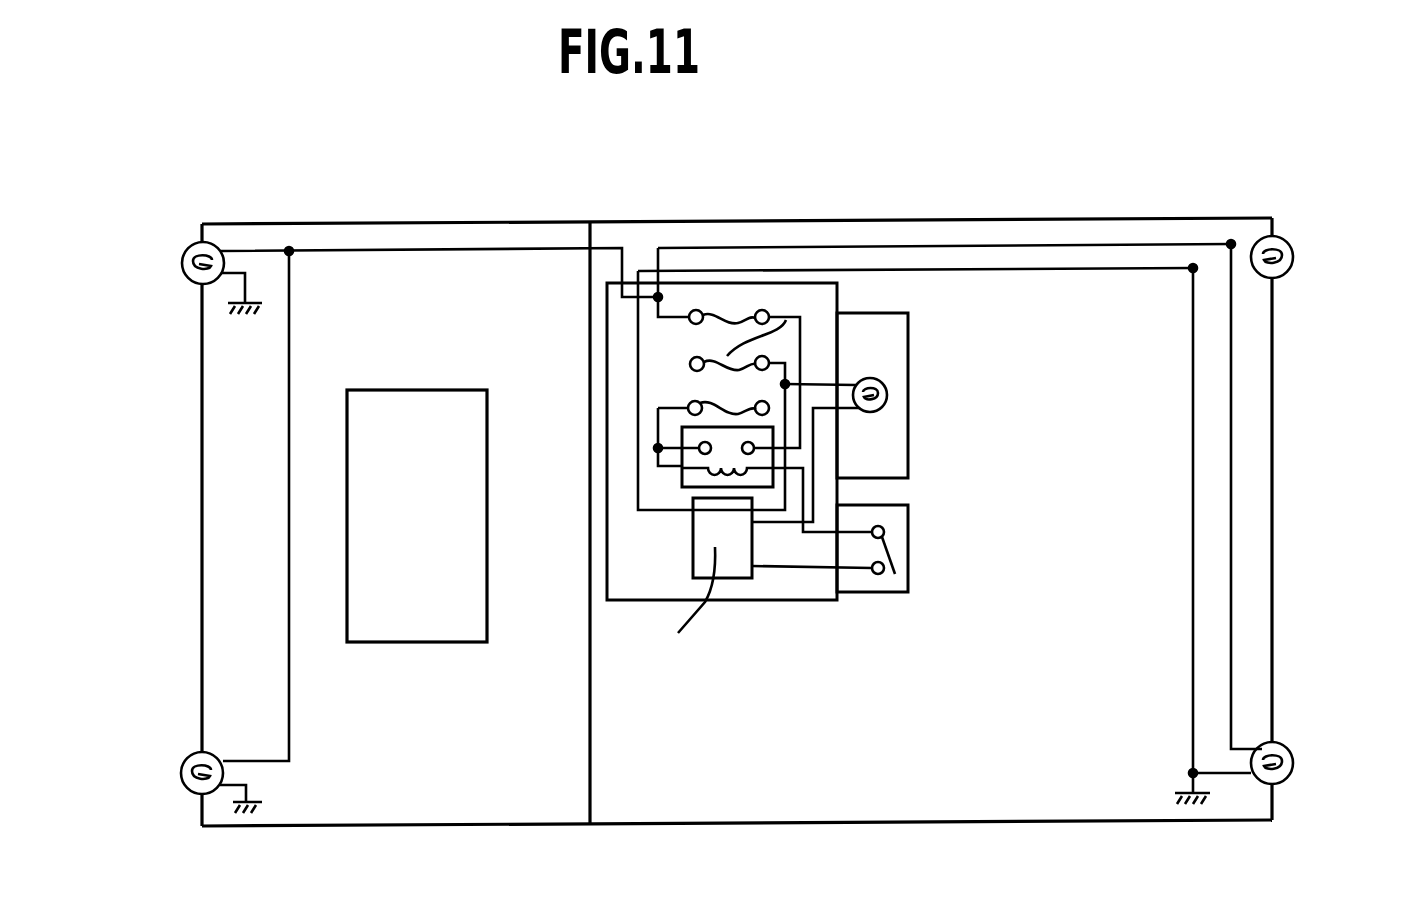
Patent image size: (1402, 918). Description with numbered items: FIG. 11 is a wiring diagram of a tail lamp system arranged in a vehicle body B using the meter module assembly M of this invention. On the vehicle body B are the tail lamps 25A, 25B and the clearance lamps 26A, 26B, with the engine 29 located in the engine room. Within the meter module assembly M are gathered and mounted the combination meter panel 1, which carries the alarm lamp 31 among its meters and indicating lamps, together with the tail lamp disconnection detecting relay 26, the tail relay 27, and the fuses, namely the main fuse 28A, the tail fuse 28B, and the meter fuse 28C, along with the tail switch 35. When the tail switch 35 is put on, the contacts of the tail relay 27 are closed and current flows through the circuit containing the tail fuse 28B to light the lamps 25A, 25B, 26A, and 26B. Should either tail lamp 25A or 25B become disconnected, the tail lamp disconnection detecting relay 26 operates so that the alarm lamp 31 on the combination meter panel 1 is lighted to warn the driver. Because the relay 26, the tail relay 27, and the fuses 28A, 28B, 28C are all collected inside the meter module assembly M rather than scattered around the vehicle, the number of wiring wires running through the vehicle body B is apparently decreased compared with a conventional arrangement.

The combination meter panel 1 is at (887, 313).
The tail lamp 25A is at (1280, 235).
The tail lamp 25B is at (1293, 757).
The tail lamp disconnection detecting relay 26 is at (693, 556).
The clearance lamp 26A is at (185, 249).
The clearance lamp 26B is at (181, 776).
The tail relay 27 is at (682, 478).
The main fuse 28A is at (705, 399).
The tail fuse 28B is at (718, 310).
The meter fuse 28C is at (786, 320).
The engine 29 is at (388, 643).
The alarm lamp 31 is at (890, 390).
The tail switch 35 is at (890, 548).
The meter module assembly M is at (838, 602).
The vehicle body B is at (1019, 823).